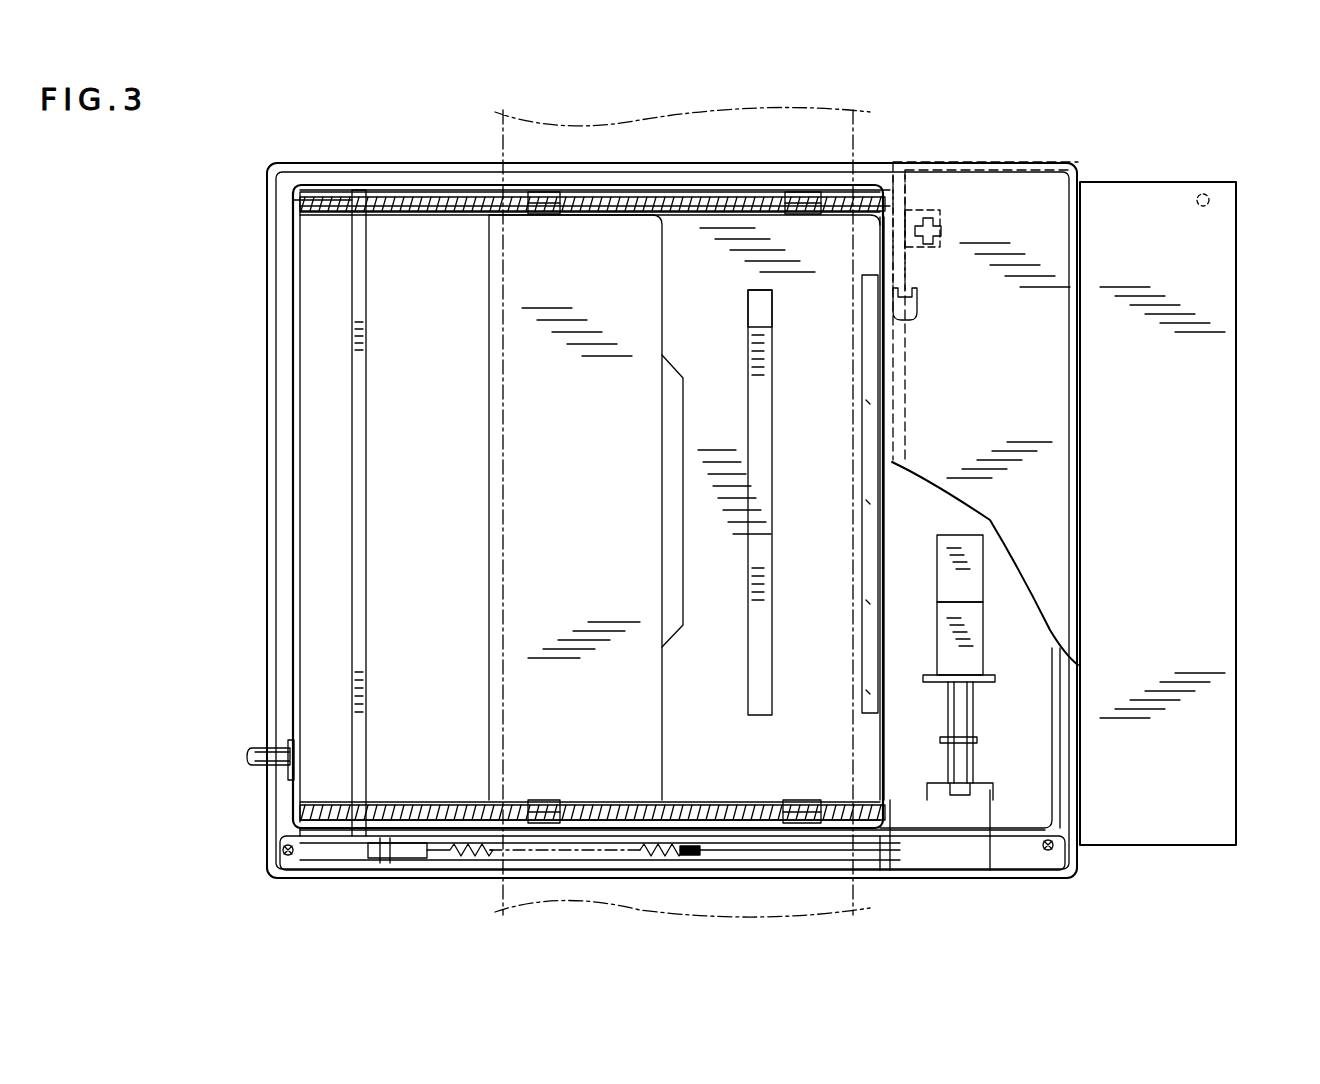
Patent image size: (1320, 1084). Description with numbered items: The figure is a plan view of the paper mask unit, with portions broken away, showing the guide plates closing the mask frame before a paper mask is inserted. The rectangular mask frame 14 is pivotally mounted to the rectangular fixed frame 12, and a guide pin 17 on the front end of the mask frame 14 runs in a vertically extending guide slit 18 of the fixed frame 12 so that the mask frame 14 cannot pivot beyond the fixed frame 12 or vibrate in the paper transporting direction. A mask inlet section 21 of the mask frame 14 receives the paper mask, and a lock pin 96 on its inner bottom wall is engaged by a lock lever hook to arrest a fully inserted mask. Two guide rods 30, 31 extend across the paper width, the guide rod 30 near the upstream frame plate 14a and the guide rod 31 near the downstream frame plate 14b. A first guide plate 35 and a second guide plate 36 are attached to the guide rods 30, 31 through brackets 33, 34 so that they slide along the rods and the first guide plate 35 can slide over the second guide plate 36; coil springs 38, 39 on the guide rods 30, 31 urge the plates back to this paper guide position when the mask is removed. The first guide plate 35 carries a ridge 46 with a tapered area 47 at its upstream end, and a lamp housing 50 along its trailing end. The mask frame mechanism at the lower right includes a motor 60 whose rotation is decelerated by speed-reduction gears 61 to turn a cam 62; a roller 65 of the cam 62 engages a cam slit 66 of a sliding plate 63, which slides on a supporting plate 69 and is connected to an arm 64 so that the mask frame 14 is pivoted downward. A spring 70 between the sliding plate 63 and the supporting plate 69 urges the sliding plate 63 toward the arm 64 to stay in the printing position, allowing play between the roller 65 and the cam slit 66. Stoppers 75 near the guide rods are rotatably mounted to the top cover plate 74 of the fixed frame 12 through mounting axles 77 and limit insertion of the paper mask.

The fixed frame 12 is at (275, 515).
The mask frame 14 is at (296, 420).
The frame plate 14a is at (322, 182).
The frame plate 14b is at (322, 836).
The guide pin 17 is at (262, 768).
The guide slit 18 is at (268, 745).
The mask inlet section 21 is at (1140, 200).
The guide rod 30 is at (303, 212).
The guide rod 31 is at (327, 802).
The bracket 33 is at (806, 205).
The bracket 34 is at (545, 205).
The first guide plate 35 is at (862, 228).
The second guide plate 36 is at (513, 267).
The coil spring 38 is at (417, 212).
The coil spring 39 is at (633, 196).
The ridge 46 is at (762, 425).
The tapered area 47 is at (752, 305).
The lamp housing 50 is at (870, 418).
The motor 60 is at (970, 565).
The speed-reduction gears 61 is at (970, 630).
The cam 62 is at (975, 740).
The sliding plate 63 is at (977, 853).
The arm 64 is at (360, 860).
The roller 65 is at (985, 793).
The cam slit 66 is at (940, 790).
The supporting plate 69 is at (296, 855).
The spring 70 is at (650, 848).
The top cover plate 74 is at (1052, 175).
The stopper 75 is at (940, 210).
The mounting axle 77 is at (913, 187).
The lock pin 96 is at (1210, 200).